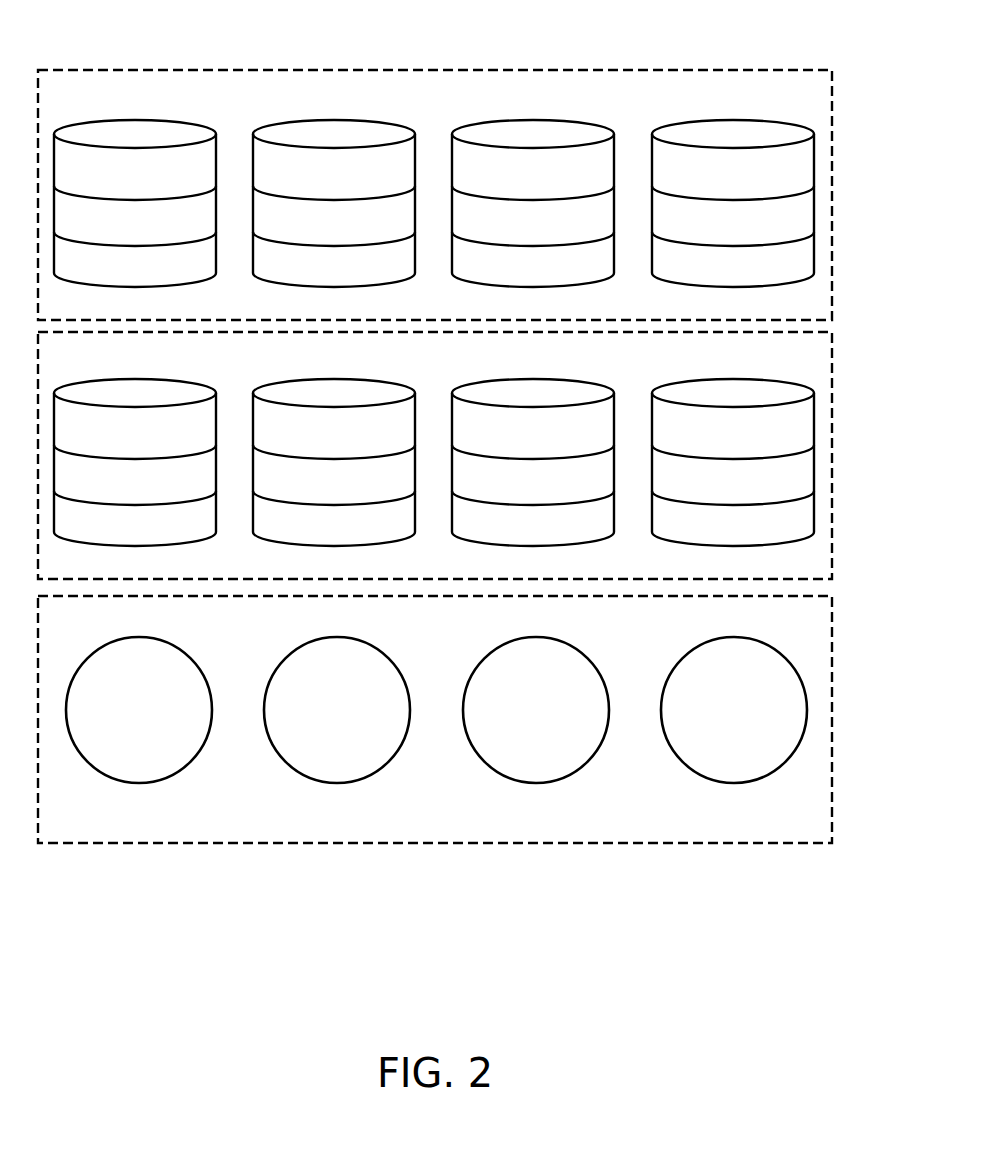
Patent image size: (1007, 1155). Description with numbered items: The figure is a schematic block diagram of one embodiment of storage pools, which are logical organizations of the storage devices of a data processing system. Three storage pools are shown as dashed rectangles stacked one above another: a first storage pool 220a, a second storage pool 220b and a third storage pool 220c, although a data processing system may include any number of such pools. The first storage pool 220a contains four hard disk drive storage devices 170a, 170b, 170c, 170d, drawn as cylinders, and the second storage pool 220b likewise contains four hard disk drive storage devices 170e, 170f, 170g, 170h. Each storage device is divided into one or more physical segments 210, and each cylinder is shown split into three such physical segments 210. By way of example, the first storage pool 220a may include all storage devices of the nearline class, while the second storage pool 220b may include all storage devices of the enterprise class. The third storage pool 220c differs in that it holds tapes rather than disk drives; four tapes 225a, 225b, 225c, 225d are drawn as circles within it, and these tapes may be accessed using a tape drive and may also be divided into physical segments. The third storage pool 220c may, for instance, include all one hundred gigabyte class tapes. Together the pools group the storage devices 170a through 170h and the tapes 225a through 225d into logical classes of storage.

The first storage pool 220a is at (489, 68).
The second storage pool 220b is at (832, 530).
The third storage pool 220c is at (832, 793).
The storage device 170a is at (134, 135).
The storage device 170b is at (333, 135).
The storage device 170c is at (532, 135).
The storage device 170d is at (732, 135).
The storage device 170e is at (134, 394).
The storage device 170f is at (333, 394).
The storage device 170g is at (532, 394).
The storage device 170h is at (732, 394).
The physical segment 210 is at (751, 535).
The tape 225a is at (116, 733).
The tape 225b is at (314, 733).
The tape 225c is at (513, 733).
The tape 225d is at (711, 733).